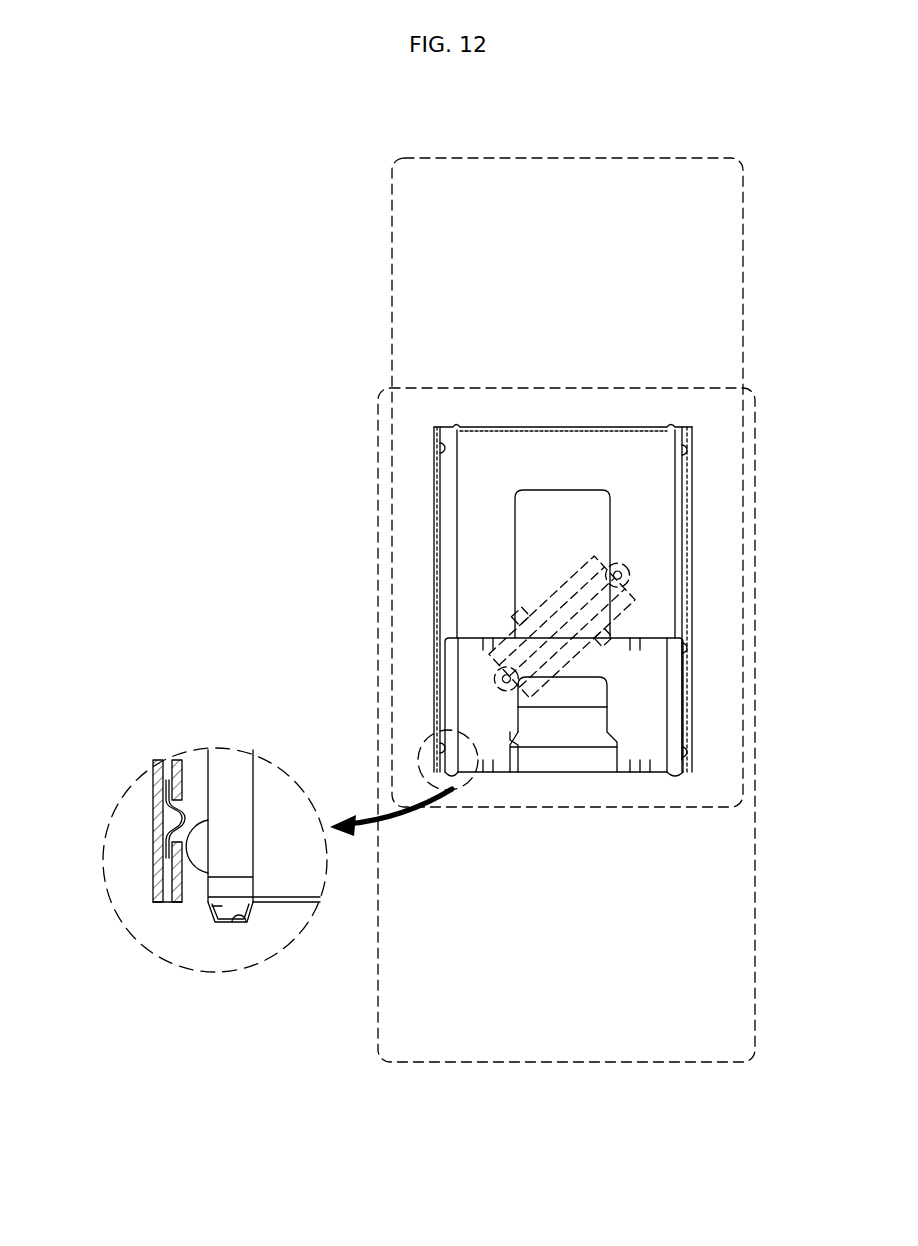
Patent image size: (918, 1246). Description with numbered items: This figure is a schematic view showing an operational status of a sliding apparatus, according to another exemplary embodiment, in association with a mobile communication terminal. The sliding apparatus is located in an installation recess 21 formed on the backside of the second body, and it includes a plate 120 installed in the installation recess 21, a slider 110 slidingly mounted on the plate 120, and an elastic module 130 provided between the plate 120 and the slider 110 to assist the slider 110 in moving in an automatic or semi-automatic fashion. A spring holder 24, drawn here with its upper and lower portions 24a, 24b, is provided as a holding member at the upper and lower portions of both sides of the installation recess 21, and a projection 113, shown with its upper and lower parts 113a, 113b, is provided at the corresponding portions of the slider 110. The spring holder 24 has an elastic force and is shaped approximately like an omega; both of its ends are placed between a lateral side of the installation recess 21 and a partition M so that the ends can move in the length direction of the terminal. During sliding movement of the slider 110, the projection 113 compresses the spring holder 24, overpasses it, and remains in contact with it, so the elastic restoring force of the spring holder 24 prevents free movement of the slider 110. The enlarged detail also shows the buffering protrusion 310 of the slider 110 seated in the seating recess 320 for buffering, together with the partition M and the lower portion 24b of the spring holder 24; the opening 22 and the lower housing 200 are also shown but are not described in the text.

The installation recess 21 is at (684, 519).
The opening 22 is at (558, 503).
The spring holder 24 is at (202, 458).
The upper elastic portion 24a is at (440, 448).
The lower elastic portion 24b is at (440, 750).
The slider 110 is at (655, 775).
The projection 113 is at (820, 655).
The upper fixing portion 113a is at (678, 648).
The lower fixing portion 113b is at (685, 752).
The plate 120 is at (600, 447).
The elastic module 130 is at (520, 588).
The housing 200 is at (665, 625).
The buffering protrusion 310 is at (212, 912).
The seating recess 320 is at (252, 915).
The partition M is at (688, 563).